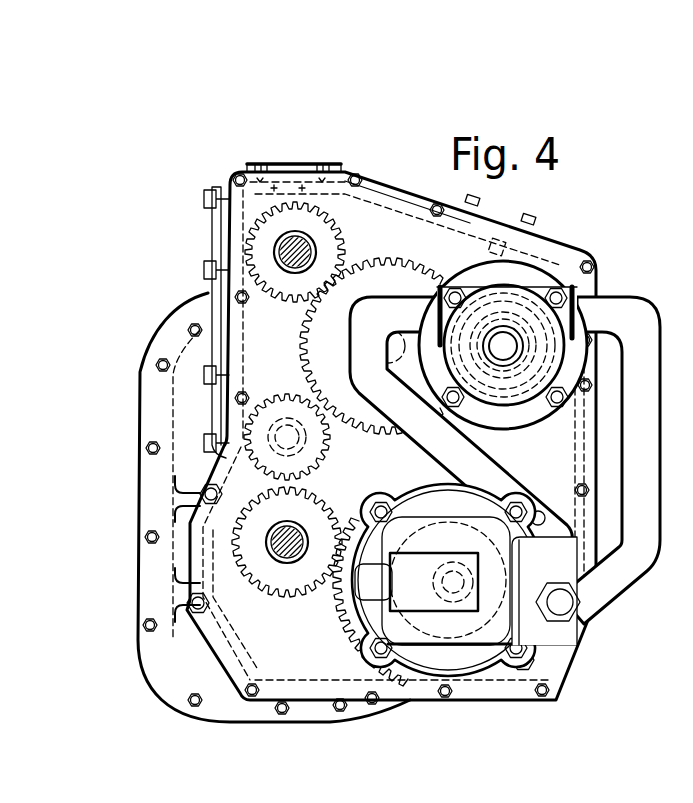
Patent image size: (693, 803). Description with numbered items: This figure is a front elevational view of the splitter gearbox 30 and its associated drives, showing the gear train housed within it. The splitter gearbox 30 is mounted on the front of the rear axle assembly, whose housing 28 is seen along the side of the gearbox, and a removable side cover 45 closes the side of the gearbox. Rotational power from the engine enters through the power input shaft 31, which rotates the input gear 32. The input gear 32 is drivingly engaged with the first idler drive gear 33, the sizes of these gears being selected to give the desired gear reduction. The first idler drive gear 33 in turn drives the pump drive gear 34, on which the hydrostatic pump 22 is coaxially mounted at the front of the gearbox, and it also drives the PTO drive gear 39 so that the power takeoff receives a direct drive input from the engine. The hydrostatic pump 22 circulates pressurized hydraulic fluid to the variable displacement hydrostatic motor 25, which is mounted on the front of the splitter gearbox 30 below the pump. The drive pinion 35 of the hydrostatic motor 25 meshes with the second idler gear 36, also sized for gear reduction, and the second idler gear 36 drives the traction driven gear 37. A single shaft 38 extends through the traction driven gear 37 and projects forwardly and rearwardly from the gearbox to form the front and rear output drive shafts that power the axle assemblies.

The splitter gearbox 30 is at (236, 80).
The housing 28 is at (168, 326).
The removable side cover 45 is at (212, 237).
The input gear 32 is at (272, 225).
The power input shaft 31 is at (295, 232).
The first idler drive gear 33 is at (381, 262).
The hydrostatic pump 22 is at (521, 320).
The pump drive gear 34 is at (574, 288).
The PTO drive gear 39 is at (271, 474).
The single shaft 38 is at (265, 546).
The traction driven gear 37 is at (273, 588).
The second idler gear 36 is at (347, 632).
The drive pinion 35 is at (491, 592).
The variable displacement hydrostatic motor 25 is at (578, 640).